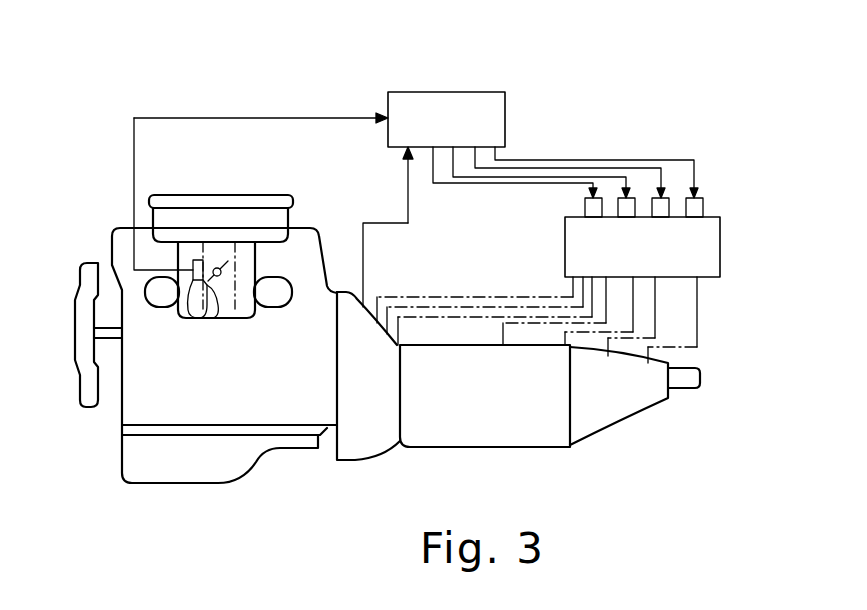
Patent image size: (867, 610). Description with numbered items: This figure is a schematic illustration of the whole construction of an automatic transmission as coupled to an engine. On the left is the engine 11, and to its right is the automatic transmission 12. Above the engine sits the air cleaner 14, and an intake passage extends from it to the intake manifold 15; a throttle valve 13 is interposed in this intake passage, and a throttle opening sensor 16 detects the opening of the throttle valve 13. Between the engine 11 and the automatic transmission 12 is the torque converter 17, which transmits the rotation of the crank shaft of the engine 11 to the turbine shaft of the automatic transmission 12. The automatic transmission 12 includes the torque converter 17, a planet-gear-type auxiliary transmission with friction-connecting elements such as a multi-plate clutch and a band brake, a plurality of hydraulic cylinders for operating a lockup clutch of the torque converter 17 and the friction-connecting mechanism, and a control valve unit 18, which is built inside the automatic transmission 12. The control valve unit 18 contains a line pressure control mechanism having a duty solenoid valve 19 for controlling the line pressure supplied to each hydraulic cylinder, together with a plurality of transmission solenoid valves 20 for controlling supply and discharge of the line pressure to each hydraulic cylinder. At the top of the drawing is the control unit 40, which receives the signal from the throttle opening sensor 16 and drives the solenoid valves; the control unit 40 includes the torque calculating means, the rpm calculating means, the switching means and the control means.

The engine 11 is at (120, 408).
The automatic transmission 12 is at (483, 448).
The throttle valve 13 is at (215, 308).
The air cleaner 14 is at (232, 197).
The intake manifold 15 is at (268, 308).
The throttle opening sensor 16 is at (189, 319).
The torque converter 17 is at (377, 448).
The control valve unit 18 is at (565, 257).
The duty solenoid valve 19 is at (585, 207).
The transmission solenoid valves 20 is at (634, 200).
The control unit 40 is at (402, 92).